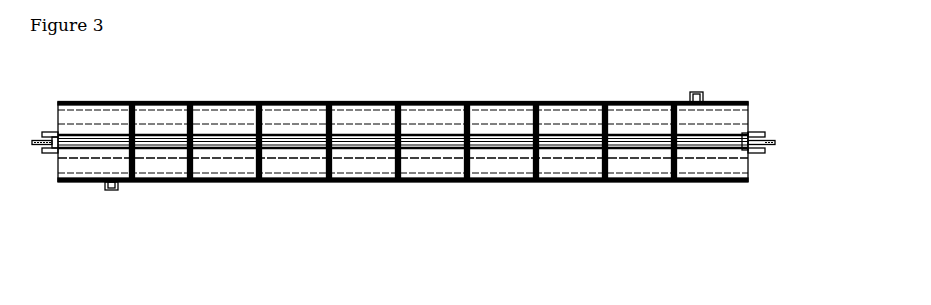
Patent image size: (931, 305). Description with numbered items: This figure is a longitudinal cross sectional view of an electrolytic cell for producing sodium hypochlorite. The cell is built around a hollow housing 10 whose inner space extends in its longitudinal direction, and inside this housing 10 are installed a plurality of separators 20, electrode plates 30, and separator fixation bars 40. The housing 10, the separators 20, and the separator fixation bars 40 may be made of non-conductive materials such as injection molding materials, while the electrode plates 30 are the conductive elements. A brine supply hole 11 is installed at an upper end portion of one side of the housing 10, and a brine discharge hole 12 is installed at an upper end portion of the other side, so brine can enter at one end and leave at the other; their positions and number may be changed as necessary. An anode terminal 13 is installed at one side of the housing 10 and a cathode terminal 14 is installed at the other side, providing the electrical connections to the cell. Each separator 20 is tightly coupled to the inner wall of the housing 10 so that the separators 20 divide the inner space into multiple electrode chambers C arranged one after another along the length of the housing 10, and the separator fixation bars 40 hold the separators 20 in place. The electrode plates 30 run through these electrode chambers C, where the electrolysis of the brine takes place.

The housing 10 is at (365, 102).
The brine supply hole 11 is at (110, 190).
The brine discharge hole 12 is at (697, 90).
The anode terminal 13 is at (47, 132).
The cathode terminal 14 is at (760, 153).
The separator 20 is at (329, 183).
The electrode plates 30 is at (428, 150).
The separator fixation bars 40 is at (567, 117).
The electrode chambers C is at (224, 132).